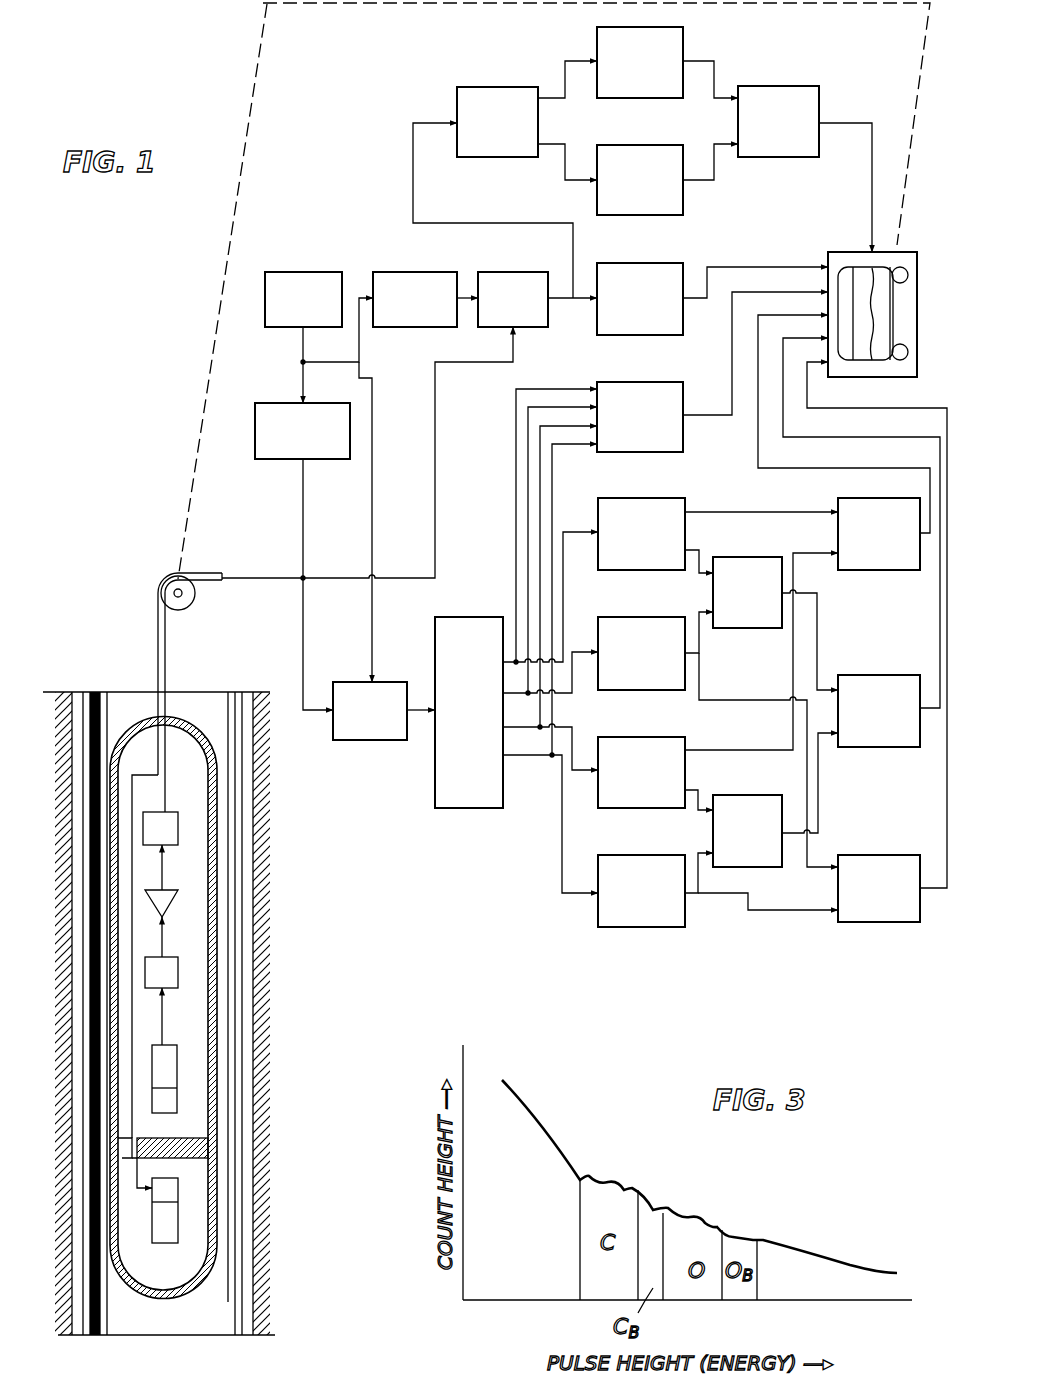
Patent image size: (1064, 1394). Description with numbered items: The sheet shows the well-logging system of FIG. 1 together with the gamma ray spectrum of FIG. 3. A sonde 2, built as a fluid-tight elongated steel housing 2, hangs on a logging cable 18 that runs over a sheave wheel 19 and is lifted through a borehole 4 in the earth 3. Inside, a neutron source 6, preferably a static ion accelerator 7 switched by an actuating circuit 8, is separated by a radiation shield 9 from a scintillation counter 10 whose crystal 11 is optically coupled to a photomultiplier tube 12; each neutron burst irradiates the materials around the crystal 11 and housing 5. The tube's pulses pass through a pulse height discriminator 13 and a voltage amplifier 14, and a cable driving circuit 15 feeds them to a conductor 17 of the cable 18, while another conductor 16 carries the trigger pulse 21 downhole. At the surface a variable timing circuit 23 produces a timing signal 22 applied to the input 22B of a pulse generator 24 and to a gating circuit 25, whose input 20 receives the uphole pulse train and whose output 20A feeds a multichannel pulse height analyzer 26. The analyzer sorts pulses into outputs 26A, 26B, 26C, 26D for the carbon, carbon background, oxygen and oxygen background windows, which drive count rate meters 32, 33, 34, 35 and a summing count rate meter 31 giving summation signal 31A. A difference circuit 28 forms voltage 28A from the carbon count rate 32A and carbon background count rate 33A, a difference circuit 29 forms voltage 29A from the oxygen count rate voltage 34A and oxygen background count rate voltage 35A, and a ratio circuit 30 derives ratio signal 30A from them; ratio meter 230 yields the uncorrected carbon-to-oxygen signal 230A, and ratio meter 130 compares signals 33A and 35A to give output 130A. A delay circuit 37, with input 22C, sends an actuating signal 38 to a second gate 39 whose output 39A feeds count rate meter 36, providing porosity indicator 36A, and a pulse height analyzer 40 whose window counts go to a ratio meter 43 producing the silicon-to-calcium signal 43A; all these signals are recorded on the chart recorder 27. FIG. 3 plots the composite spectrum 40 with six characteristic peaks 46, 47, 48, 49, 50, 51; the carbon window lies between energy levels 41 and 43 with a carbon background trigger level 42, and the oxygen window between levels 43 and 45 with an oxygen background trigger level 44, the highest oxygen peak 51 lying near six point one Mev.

In FIG. 1, the sonde 2 is at (222, 943).
In FIG. 1, the earth 3 is at (330, 971).
In FIG. 1, the borehole 4 is at (250, 815).
In FIG. 1, the housing 5 is at (213, 975).
In FIG. 1, the neutron source 6 is at (143, 1228).
In FIG. 1, the static ion accelerator 7 is at (180, 1233).
In FIG. 1, the actuating circuit 8 is at (180, 1193).
In FIG. 1, the radiation shield 9 is at (203, 1150).
In FIG. 1, the scintillation counter 10 is at (188, 1077).
In FIG. 1, the crystal 11 is at (152, 1102).
In FIG. 1, the photomultiplier tube 12 is at (157, 1068).
In FIG. 1, the pulse height discriminator 13 is at (175, 982).
In FIG. 1, the voltage amplifier 14 is at (177, 902).
In FIG. 1, the cable driving circuit 15 is at (178, 838).
In FIG. 1, the conductor 16 is at (132, 800).
In FIG. 1, the conductor 17 is at (166, 800).
In FIG. 1, the logging cable 18 is at (167, 656).
In FIG. 1, the sheave wheel 19 is at (192, 602).
In FIG. 1, the detection signal input 20 is at (285, 580).
In FIG. 1, the gate output 20A is at (420, 708).
In FIG. 1, the trigger pulse 21 is at (303, 492).
In FIG. 1, the timing signal 22 is at (305, 341).
In FIG. 1, the pulse generator input 22B is at (305, 383).
In FIG. 1, the delay circuit input 22C is at (360, 341).
In FIG. 1, the variable timing circuit 23 is at (303, 272).
In FIG. 1, the pulse generator 24 is at (276, 403).
In FIG. 1, the gating circuit 25 is at (366, 740).
In FIG. 1, the multichannel pulse height analyzer 26 is at (468, 810).
In FIG. 1, the analyzer output 26A is at (516, 488).
In FIG. 1, the analyzer output 26B is at (528, 515).
In FIG. 1, the analyzer output 26C is at (540, 545).
In FIG. 1, the analyzer output 26D is at (552, 575).
In FIG. 1, the chart recorder 27 is at (840, 252).
In FIG. 1, the difference circuit 28 is at (753, 628).
In FIG. 1, the difference voltage 28A is at (819, 636).
In FIG. 1, the difference circuit 29 is at (748, 795).
In FIG. 1, the difference voltage 29A is at (818, 792).
In FIG. 1, the ratio circuit 30 is at (892, 747).
In FIG. 1, the ratio signal 30A is at (810, 437).
In FIG. 1, the count rate meter 31 is at (630, 382).
In FIG. 1, the summation signal 31A is at (732, 345).
In FIG. 1, the count rate meter 32 is at (632, 498).
In FIG. 1, the carbon count rate 32A is at (700, 552).
In FIG. 1, the count rate meter 33 is at (632, 617).
In FIG. 1, the carbon background count rate 33A is at (700, 656).
In FIG. 1, the count rate meter 34 is at (632, 737).
In FIG. 1, the oxygen count rate voltage 34A is at (698, 790).
In FIG. 1, the count rate meter 35 is at (632, 855).
In FIG. 1, the oxygen background count rate voltage 35A is at (693, 895).
In FIG. 1, the count rate meter 36 is at (630, 263).
In FIG. 1, the thermal capture porosity indicator signal 36A is at (720, 267).
In FIG. 1, the delay circuit 37 is at (396, 272).
In FIG. 1, the actuating signal 38 is at (465, 298).
In FIG. 1, the second gate 39 is at (515, 272).
In FIG. 1, the second gate output 39A is at (565, 300).
In FIG. 1, the pulse height analyzer 40 is at (481, 87).
In FIG. 3, the pulse height analyzer 40 is at (525, 1107).
In FIG. 1, the lower energy level 41 is at (597, 35).
In FIG. 3, the lower energy level 41 is at (578, 1234).
In FIG. 1, the carbon background trigger level 42 is at (650, 145).
In FIG. 3, the carbon background trigger level 42 is at (637, 1278).
In FIG. 1, the ratio meter 43 is at (788, 86).
In FIG. 3, the ratio meter 43 is at (665, 1250).
In FIG. 1, the lithology signal 43A is at (874, 135).
In FIG. 3, the oxygen background trigger level 44 is at (720, 1283).
In FIG. 3, the upper energy level 45 is at (758, 1287).
In FIG. 3, the characteristic peak 46 is at (588, 1173).
In FIG. 3, the characteristic peak 47 is at (613, 1177).
In FIG. 3, the characteristic peak 48 is at (635, 1185).
In FIG. 3, the characteristic peak 49 is at (673, 1205).
In FIG. 3, the characteristic peak 50 is at (697, 1215).
In FIG. 3, the characteristic peak 51 is at (720, 1223).
In FIG. 1, the ratio meter 130 is at (897, 922).
In FIG. 1, the background ratio output signal 130A is at (858, 407).
In FIG. 1, the ratio meter 230 is at (890, 570).
In FIG. 1, the uncorrected ratio output signal 230A is at (756, 455).